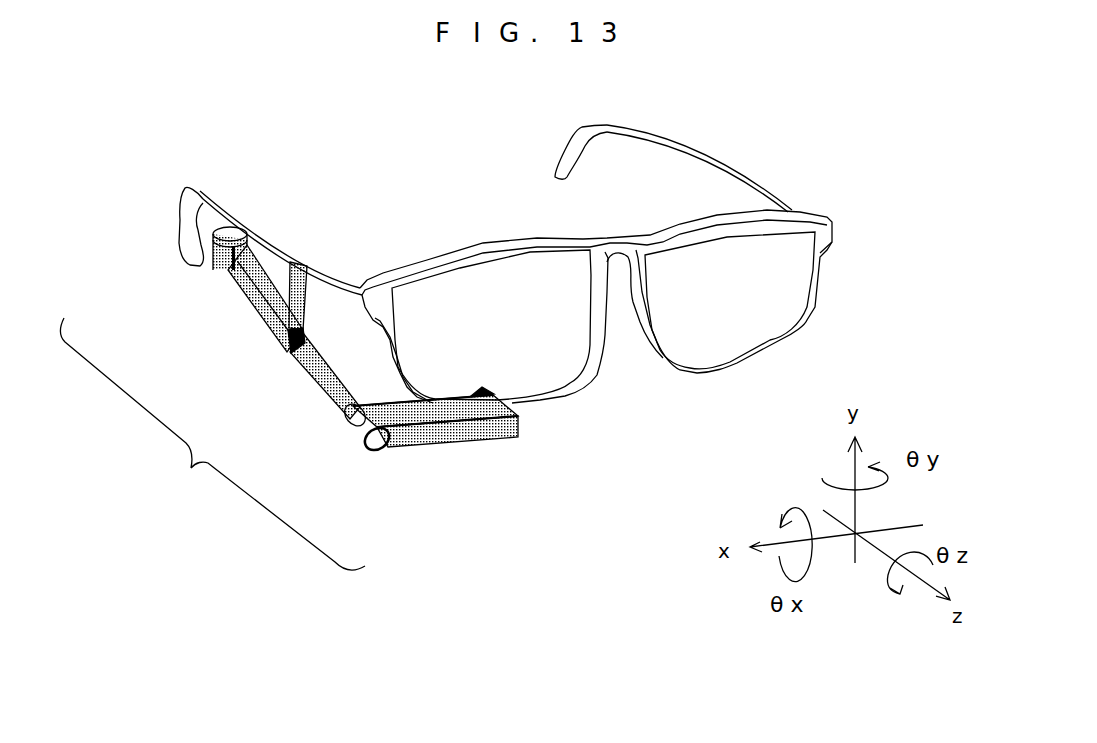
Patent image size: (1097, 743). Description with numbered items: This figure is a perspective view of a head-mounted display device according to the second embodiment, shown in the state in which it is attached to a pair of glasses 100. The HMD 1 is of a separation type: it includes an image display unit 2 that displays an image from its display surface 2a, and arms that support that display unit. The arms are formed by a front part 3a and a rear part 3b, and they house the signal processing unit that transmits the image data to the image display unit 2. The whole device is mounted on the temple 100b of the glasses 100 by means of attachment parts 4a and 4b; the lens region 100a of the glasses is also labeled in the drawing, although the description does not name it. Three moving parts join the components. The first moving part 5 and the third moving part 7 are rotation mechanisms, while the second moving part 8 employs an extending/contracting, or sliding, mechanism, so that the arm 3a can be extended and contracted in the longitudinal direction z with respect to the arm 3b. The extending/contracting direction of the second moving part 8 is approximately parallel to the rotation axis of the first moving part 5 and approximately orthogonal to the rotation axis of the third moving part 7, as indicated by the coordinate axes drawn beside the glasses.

The HMD 1 is at (180, 518).
The image display unit 2 is at (457, 437).
The display surface 2a is at (480, 392).
The arm (front part) 3a is at (315, 378).
The arm (rear part) 3b is at (243, 300).
The attachment part 4a is at (303, 265).
The attachment part 4b is at (246, 231).
The first moving part 5 is at (370, 440).
The third moving part 7 is at (223, 258).
The second moving part 8 is at (287, 368).
The glasses 100 is at (813, 225).
The lens 100a is at (460, 288).
The temple 100b is at (273, 247).